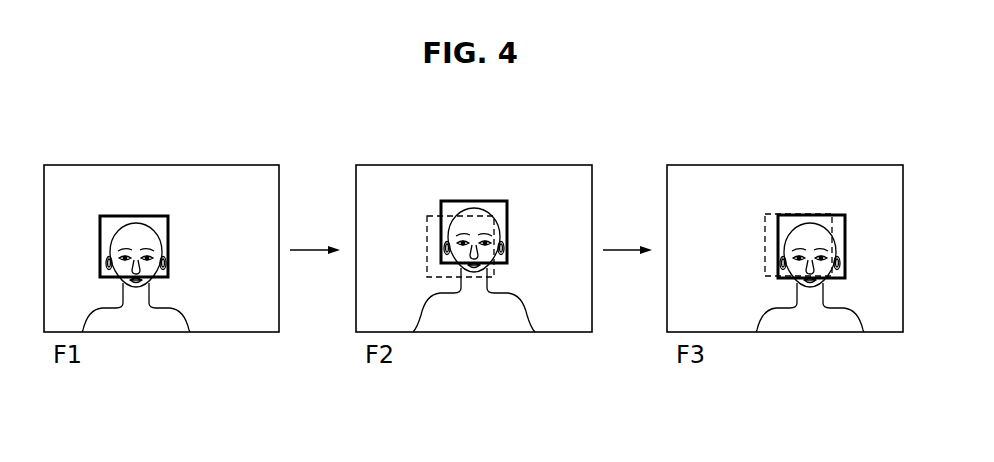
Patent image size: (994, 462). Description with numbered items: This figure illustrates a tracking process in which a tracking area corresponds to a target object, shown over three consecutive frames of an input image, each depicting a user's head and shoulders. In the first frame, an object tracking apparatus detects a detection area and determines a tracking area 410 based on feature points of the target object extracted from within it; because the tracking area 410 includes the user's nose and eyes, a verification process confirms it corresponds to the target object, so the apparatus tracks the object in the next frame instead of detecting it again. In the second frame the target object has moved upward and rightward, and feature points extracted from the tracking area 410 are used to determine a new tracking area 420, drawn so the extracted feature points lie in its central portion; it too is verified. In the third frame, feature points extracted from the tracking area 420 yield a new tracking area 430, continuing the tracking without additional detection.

The tracking area 410 is at (134, 214).
The tracking area 420 is at (482, 200).
The tracking area 430 is at (833, 214).